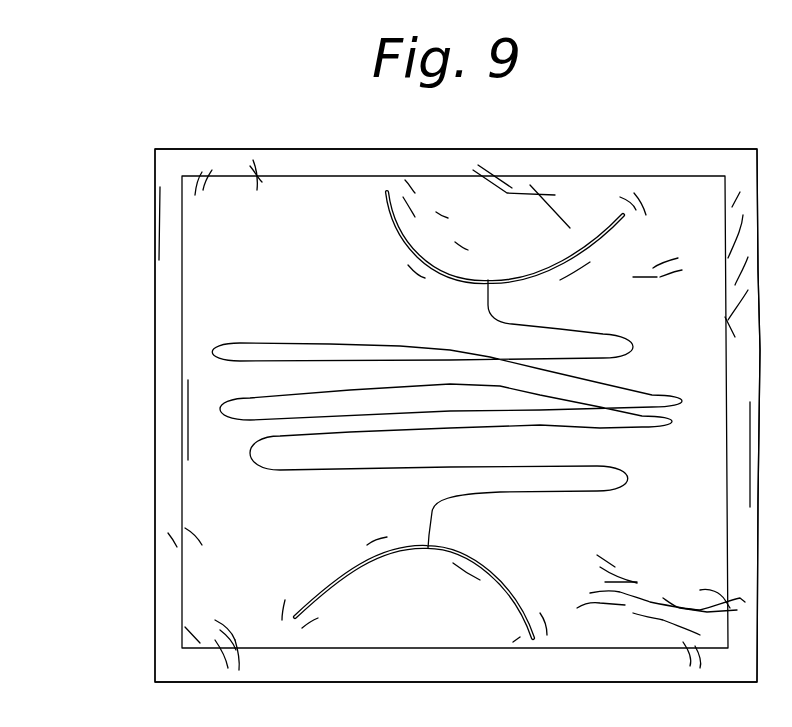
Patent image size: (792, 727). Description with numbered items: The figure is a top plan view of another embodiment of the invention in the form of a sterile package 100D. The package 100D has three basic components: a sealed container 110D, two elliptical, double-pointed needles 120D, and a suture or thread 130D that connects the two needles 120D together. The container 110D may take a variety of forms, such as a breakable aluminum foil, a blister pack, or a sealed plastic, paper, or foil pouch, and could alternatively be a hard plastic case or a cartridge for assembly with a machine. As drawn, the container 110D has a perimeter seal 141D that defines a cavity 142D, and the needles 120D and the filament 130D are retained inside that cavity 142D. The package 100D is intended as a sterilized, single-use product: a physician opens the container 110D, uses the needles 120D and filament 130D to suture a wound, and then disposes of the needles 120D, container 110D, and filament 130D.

The sterile package 100D is at (134, 196).
The sealed container 110D is at (283, 138).
The double-pointed needles 120D is at (390, 242).
The suture or thread 130D is at (347, 328).
The perimeter seal 141D is at (167, 392).
The cavity 142D is at (212, 290).